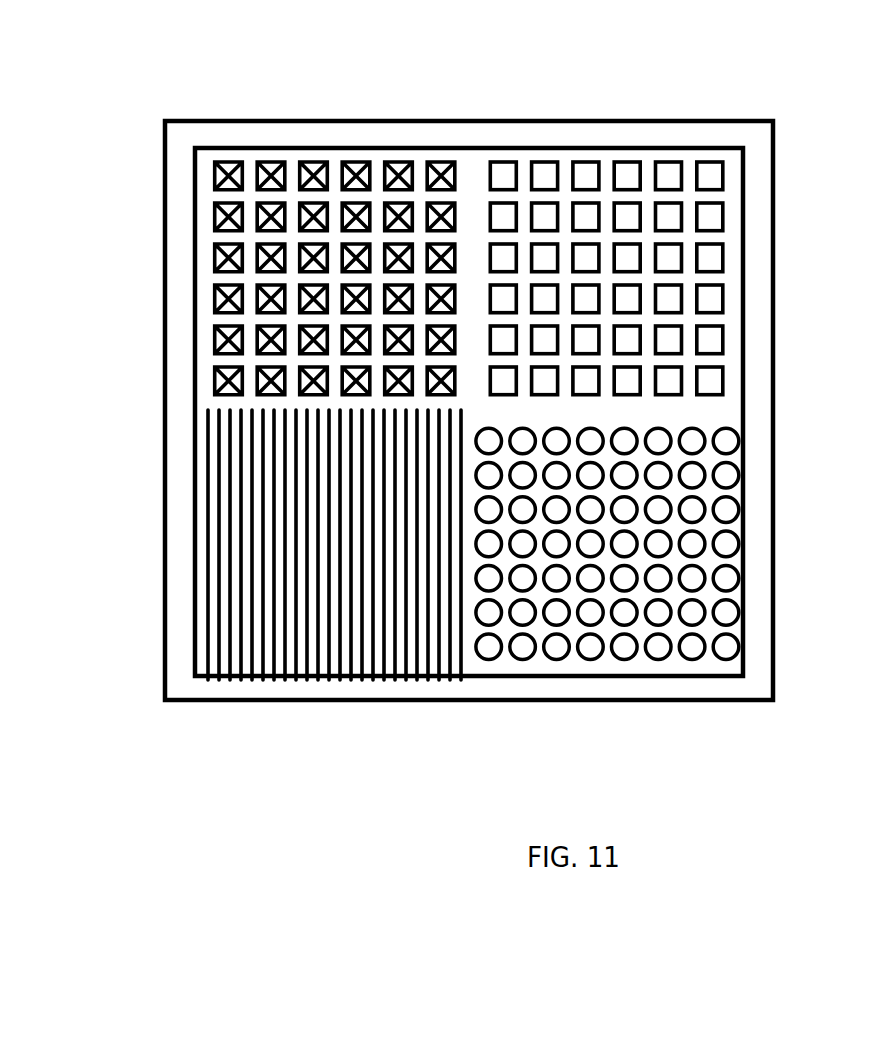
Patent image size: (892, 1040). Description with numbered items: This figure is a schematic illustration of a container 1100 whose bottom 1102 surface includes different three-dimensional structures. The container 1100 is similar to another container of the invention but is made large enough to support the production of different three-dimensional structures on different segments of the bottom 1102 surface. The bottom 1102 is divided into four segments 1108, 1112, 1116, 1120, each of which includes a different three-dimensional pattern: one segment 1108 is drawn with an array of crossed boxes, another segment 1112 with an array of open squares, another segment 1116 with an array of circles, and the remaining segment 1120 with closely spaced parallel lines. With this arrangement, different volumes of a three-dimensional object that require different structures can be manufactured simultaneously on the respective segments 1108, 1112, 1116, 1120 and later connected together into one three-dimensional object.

The container 1100 is at (160, 588).
The bottom 1102 is at (207, 397).
The segment 1108 is at (340, 193).
The segment 1112 is at (607, 193).
The segment 1116 is at (643, 632).
The segment 1120 is at (362, 640).